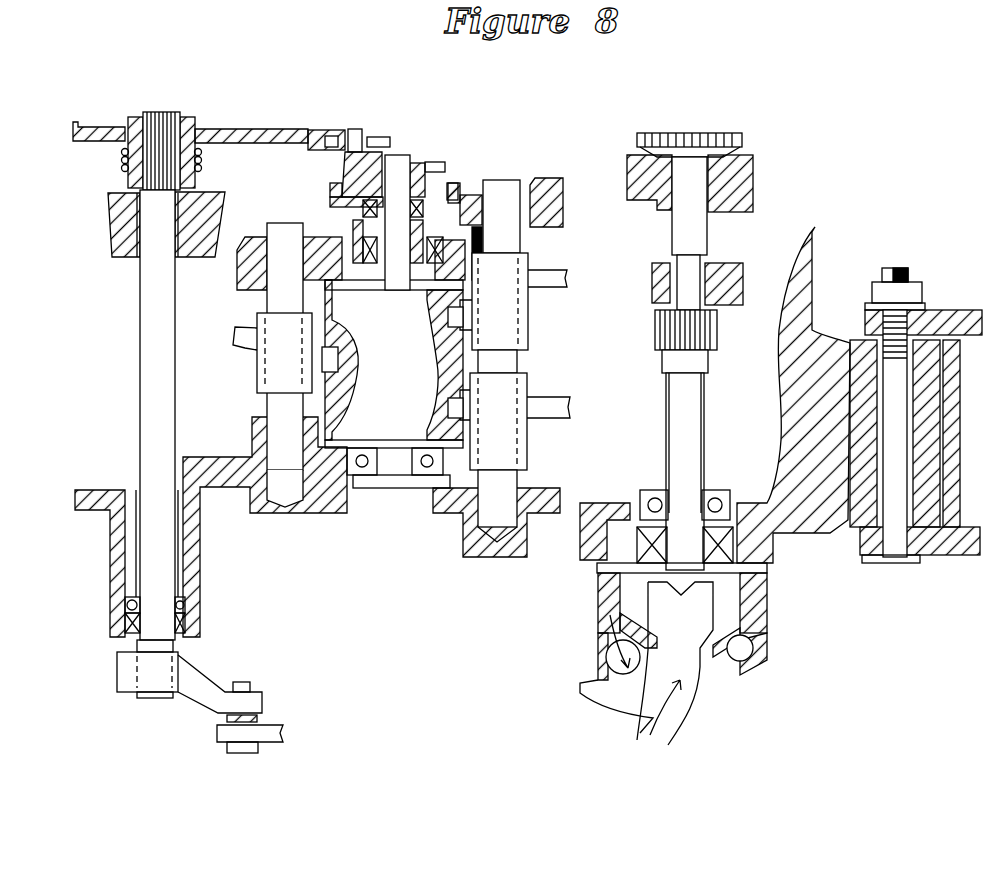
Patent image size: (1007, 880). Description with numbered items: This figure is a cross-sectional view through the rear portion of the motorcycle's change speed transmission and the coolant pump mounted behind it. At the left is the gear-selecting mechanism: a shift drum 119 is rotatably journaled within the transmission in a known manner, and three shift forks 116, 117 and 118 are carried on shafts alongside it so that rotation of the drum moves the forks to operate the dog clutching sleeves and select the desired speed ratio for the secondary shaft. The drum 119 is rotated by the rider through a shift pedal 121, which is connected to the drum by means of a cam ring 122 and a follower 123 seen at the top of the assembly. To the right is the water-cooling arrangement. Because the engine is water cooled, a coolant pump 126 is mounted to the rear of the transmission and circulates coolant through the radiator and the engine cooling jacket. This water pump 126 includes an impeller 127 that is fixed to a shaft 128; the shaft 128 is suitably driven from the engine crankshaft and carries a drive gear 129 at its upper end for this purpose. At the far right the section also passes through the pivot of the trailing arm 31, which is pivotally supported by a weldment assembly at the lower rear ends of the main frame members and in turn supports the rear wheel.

The trailing arm 31 is at (957, 547).
The shift fork 116 is at (262, 365).
The shift fork 117 is at (523, 303).
The shift fork 118 is at (520, 428).
The shift drum 119 is at (402, 420).
The shift pedal 121 is at (223, 733).
The cam ring 122 is at (288, 128).
The follower 123 is at (358, 128).
The coolant pump 126 is at (733, 670).
The impeller 127 is at (727, 605).
The shaft 128 is at (697, 232).
The drive gear 129 is at (743, 143).